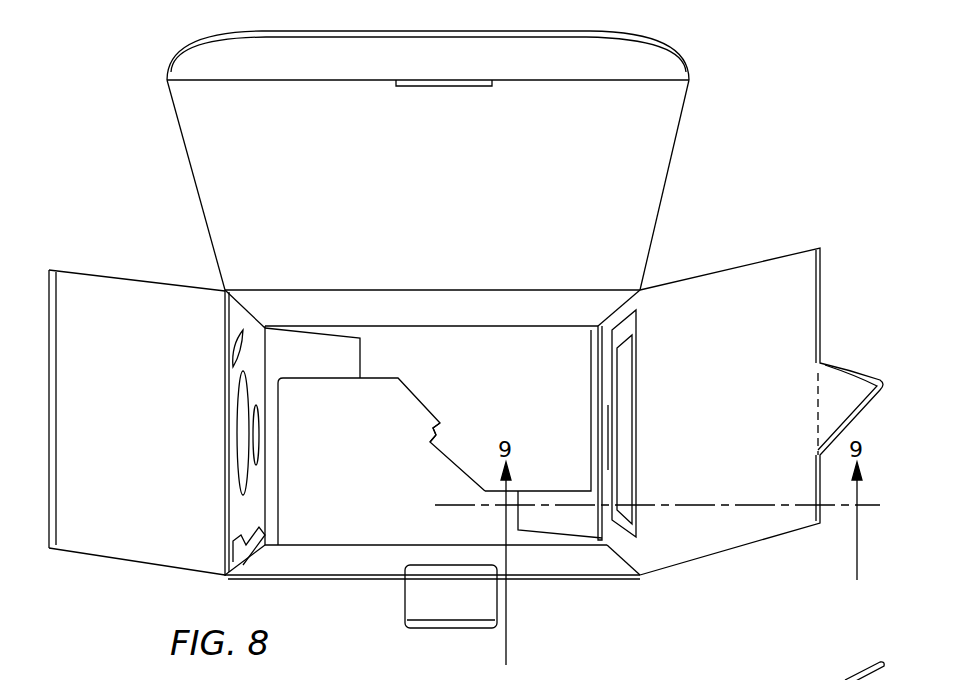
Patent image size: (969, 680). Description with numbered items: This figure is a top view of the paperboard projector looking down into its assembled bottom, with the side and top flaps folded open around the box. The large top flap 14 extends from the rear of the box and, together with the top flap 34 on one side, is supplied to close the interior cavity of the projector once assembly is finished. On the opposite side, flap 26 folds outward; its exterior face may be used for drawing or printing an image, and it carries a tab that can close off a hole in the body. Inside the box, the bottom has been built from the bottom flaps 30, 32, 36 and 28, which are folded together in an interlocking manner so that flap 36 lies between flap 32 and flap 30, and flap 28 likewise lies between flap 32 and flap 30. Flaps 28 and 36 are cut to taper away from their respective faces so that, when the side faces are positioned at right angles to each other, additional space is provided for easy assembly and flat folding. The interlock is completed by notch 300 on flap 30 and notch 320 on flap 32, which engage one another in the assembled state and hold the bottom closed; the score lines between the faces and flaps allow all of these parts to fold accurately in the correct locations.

The top flap 14 is at (440, 201).
The flap 26 is at (730, 406).
The bottom flap 28 is at (579, 514).
The bottom flap 30 is at (556, 384).
The bottom flap 32 is at (328, 515).
The top flap 34 is at (136, 406).
The flap 36 is at (308, 363).
The notch 300 is at (442, 427).
The notch 320 is at (430, 442).